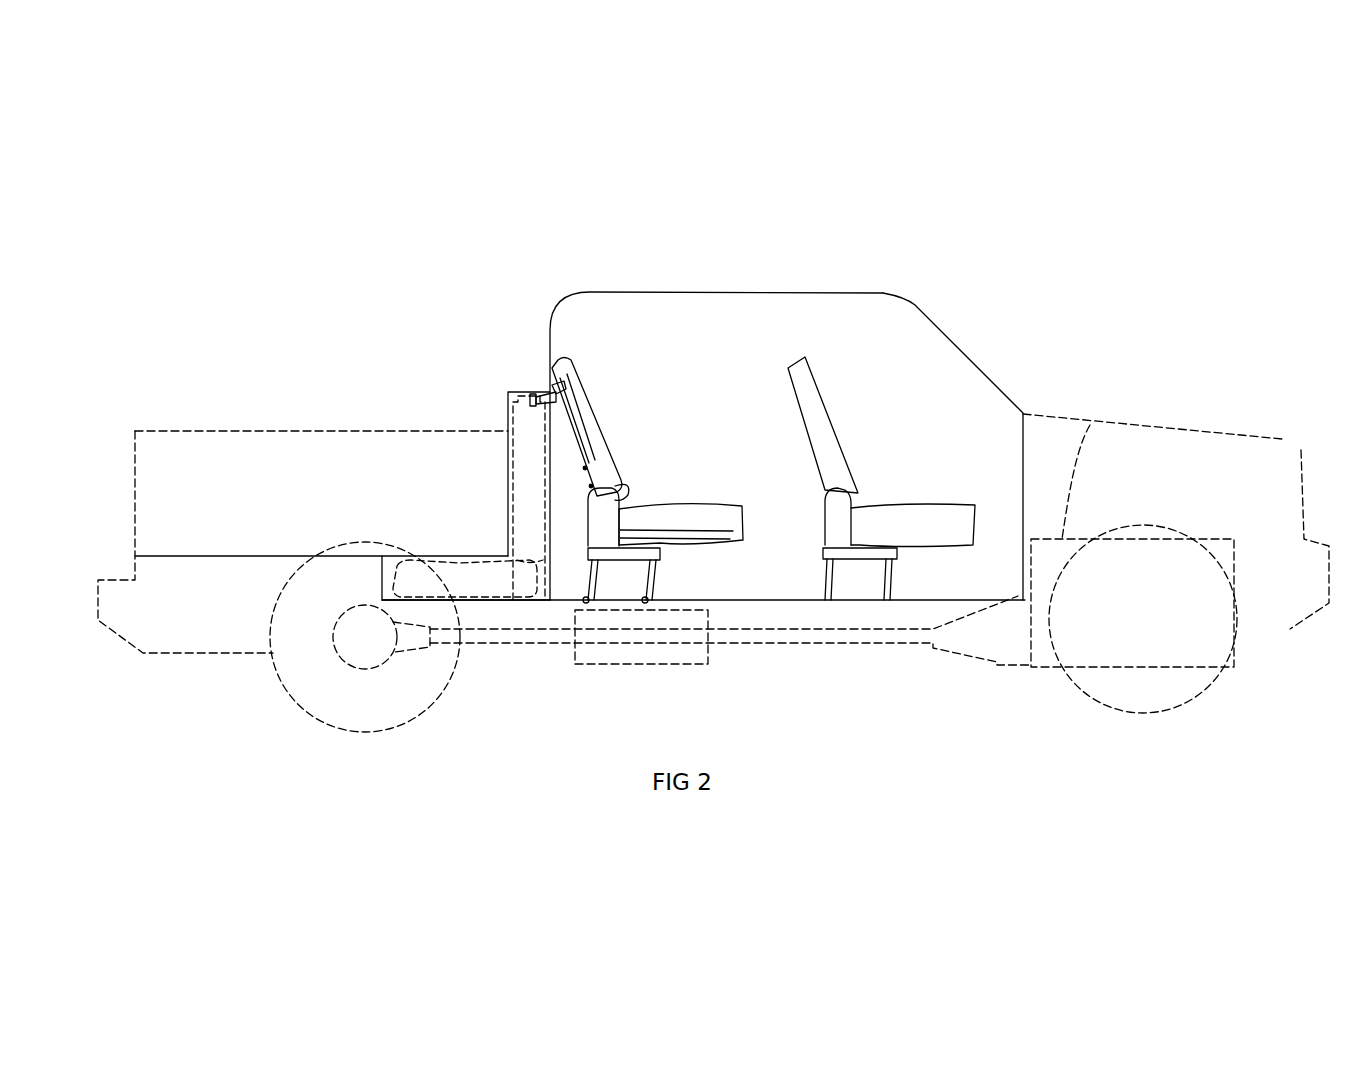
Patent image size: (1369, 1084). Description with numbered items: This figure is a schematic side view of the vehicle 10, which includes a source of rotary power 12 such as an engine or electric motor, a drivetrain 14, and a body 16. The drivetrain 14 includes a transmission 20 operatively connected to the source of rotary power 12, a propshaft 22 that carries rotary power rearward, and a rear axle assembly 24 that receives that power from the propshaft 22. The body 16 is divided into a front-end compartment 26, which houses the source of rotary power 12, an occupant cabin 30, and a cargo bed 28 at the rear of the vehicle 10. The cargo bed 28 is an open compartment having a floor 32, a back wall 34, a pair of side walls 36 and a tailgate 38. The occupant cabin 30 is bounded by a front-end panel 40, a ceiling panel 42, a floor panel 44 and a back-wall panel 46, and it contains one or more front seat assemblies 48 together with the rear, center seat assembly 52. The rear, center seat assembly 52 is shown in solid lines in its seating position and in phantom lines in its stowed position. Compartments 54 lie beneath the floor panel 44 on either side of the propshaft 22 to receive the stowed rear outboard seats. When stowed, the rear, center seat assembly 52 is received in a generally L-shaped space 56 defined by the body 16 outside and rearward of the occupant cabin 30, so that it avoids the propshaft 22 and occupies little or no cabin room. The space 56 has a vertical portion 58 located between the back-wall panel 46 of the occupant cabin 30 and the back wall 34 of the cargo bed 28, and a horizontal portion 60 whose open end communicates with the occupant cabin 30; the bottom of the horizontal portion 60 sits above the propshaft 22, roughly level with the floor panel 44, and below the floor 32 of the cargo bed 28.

The vehicle 10 is at (800, 236).
The source of rotary power 12 is at (1090, 425).
The drivetrain 14 is at (893, 672).
The body 16 is at (1068, 395).
The transmission 20 is at (997, 665).
The propshaft 22 is at (847, 648).
The rear axle assembly 24 is at (433, 700).
The front-end compartment 26 is at (1184, 450).
The cargo bed 28 is at (262, 450).
The occupant cabin 30 is at (650, 308).
The floor 32 is at (250, 556).
The back wall 34 is at (508, 440).
The side walls 36 is at (336, 431).
The tailgate 38 is at (135, 465).
The front-end panel 40 is at (1023, 470).
The ceiling panel 42 is at (765, 294).
The floor panel 44 is at (760, 600).
The back-wall panel 46 is at (558, 455).
The front seat assemblies 48 is at (812, 375).
The rear, center seat assembly 52 is at (716, 500).
The compartments 54 is at (685, 664).
The space 56 is at (420, 545).
The vertical portion 58 is at (547, 393).
The horizontal portion 60 is at (493, 600).